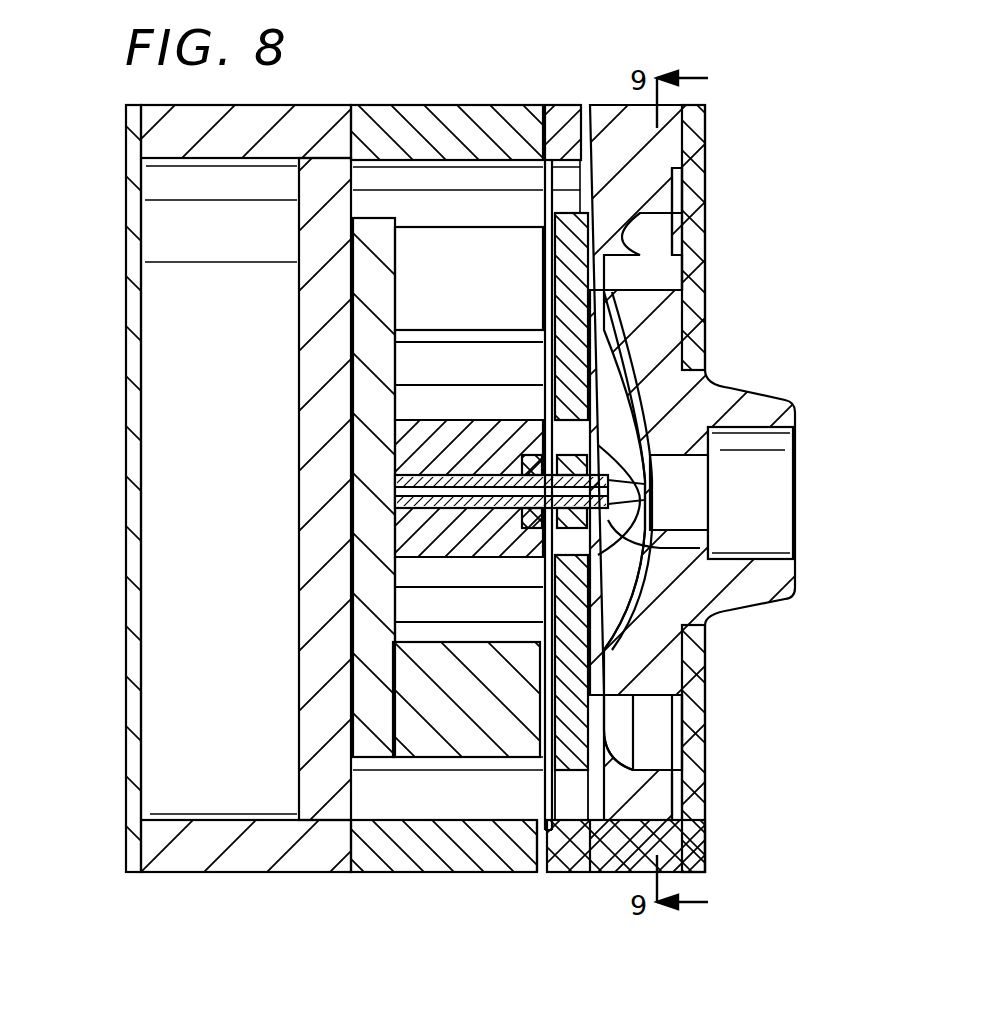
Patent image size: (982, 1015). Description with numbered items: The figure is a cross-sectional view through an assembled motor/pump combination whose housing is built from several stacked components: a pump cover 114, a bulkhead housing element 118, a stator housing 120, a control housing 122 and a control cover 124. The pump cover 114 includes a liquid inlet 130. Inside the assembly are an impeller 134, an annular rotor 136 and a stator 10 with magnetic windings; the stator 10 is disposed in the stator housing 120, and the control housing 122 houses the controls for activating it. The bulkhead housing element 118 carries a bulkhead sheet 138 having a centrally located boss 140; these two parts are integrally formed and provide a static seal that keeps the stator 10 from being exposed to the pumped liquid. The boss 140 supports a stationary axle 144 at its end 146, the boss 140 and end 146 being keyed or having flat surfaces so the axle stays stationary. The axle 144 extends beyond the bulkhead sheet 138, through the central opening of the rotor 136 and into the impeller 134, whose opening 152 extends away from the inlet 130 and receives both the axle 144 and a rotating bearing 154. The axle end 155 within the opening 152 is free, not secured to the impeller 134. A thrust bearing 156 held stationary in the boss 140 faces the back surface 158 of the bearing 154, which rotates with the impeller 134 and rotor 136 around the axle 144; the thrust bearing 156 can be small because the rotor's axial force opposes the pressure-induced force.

The stator 10 is at (436, 227).
The pump cover 114 is at (696, 240).
The bulkhead housing element 118 is at (566, 122).
The stator housing 120 is at (392, 118).
The control housing 122 is at (262, 118).
The control cover 124 is at (127, 272).
The liquid inlet 130 is at (778, 506).
The impeller 134 is at (625, 346).
The rotor 136 is at (578, 740).
The bulkhead sheet 138 is at (545, 182).
The centrally located boss 140 is at (425, 541).
The stationary axle 144 is at (410, 506).
The end of axle 146 is at (418, 468).
The opening of impeller 152 is at (625, 406).
The rotating bearing 154 is at (640, 552).
The free end of axle 155 is at (620, 542).
The thrust bearing 156 is at (540, 462).
The back surface of bearing 158 is at (535, 562).